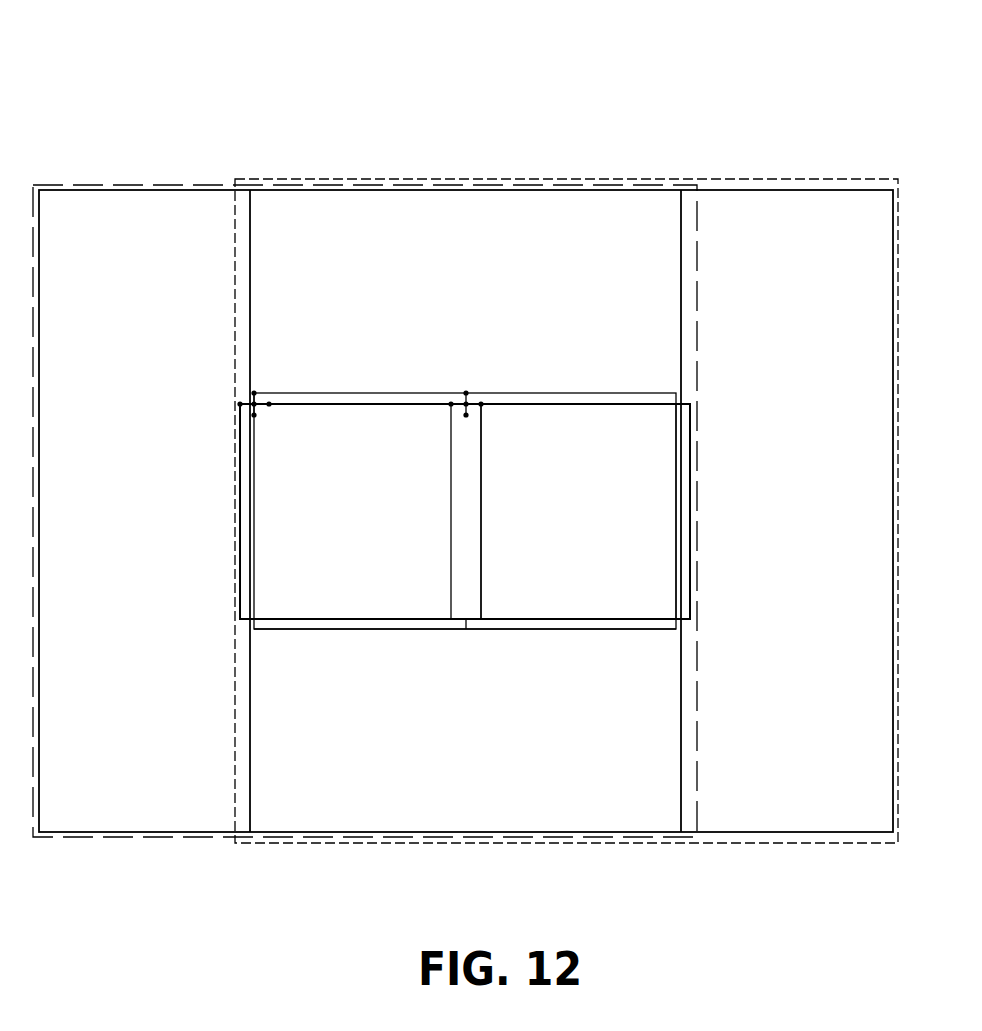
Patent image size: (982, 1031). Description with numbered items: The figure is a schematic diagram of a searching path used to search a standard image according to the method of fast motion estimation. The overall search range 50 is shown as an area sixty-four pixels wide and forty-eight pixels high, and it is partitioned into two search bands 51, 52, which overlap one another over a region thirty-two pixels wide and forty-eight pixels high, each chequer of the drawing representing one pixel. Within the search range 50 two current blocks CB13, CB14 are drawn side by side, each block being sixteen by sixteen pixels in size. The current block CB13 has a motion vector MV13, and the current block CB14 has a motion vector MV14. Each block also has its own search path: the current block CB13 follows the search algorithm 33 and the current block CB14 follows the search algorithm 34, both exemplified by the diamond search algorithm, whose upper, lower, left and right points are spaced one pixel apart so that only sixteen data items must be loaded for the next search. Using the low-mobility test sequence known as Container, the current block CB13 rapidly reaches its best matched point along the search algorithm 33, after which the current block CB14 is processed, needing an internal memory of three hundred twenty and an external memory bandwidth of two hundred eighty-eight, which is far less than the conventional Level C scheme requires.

The search range 50 is at (802, 107).
The search band 51 is at (65, 837).
The search band 52 is at (843, 843).
The search algorithm 33 is at (243, 388).
The search algorithm 34 is at (473, 377).
The motion vector MV13 is at (465, 511).
The motion vector MV14 is at (578, 511).
The current block CB13 is at (364, 629).
The current block CB14 is at (567, 629).